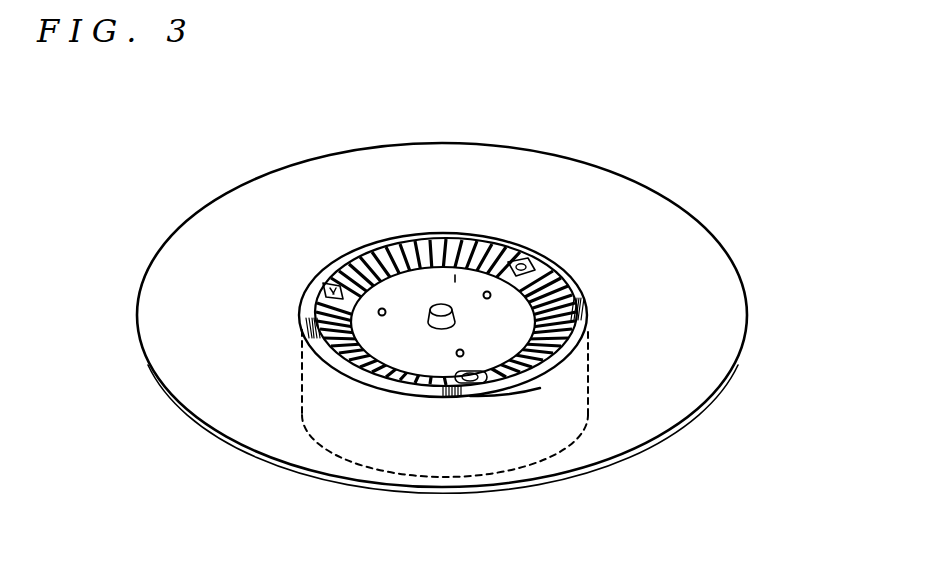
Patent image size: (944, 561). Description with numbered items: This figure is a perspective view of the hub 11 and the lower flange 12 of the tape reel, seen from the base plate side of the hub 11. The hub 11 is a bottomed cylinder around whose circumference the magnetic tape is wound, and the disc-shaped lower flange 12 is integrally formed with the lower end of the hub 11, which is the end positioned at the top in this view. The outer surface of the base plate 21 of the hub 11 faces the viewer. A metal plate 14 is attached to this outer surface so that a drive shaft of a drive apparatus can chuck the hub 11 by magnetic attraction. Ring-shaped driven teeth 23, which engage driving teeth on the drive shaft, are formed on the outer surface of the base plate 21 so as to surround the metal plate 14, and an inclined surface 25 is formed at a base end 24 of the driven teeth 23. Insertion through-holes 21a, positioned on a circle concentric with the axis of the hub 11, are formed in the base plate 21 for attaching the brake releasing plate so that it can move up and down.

The hub 11 is at (327, 432).
The lower flange 12 is at (692, 376).
The metal plate 14 is at (412, 286).
The base plate 21 is at (482, 224).
The insertion through-holes 21a is at (332, 292).
The driven teeth 23 is at (585, 280).
The base end 24 is at (507, 388).
The inclined surface 25 is at (550, 362).